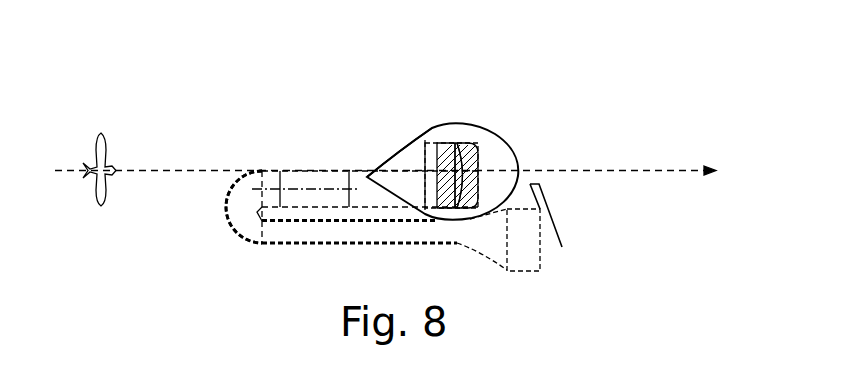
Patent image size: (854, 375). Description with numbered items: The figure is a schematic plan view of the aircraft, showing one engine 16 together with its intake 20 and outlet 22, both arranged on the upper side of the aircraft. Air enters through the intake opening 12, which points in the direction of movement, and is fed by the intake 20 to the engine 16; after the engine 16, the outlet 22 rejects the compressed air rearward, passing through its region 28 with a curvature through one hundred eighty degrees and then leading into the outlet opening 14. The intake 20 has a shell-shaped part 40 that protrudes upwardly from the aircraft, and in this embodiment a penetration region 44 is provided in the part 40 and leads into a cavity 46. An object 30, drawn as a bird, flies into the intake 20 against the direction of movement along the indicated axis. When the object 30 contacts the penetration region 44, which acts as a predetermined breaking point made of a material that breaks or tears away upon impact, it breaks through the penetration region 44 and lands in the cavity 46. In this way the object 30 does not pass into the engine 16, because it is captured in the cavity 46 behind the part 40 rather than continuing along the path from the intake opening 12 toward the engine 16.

The intake opening 12 is at (382, 168).
The outlet opening 14 is at (523, 243).
The engine 16 is at (308, 178).
The intake 20 is at (398, 108).
The outlet 22 is at (254, 281).
The region with a curvature through 180° 28 is at (240, 222).
The object 30 is at (112, 147).
The shell-shaped part 40 is at (489, 148).
The penetration region 44 is at (458, 143).
The cavity 46 is at (478, 178).